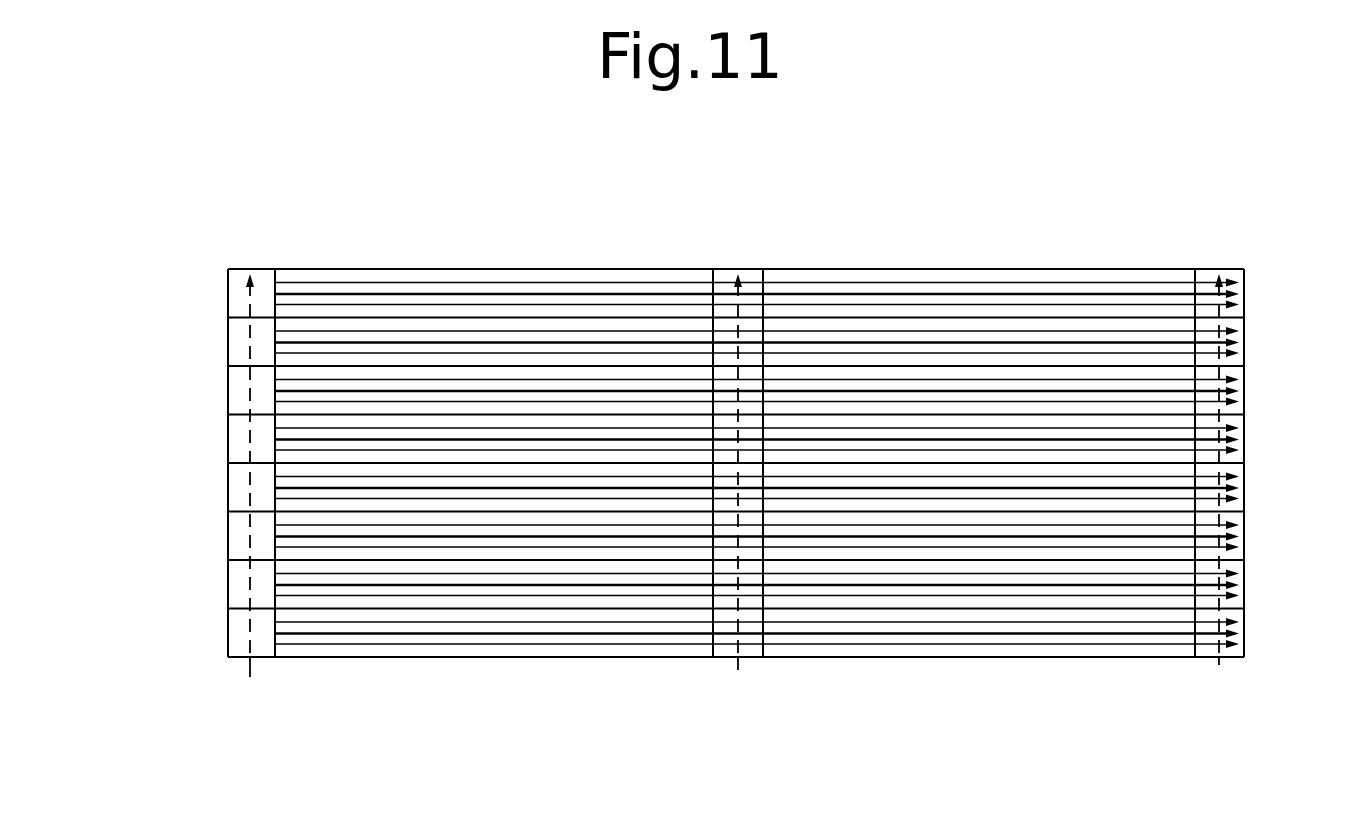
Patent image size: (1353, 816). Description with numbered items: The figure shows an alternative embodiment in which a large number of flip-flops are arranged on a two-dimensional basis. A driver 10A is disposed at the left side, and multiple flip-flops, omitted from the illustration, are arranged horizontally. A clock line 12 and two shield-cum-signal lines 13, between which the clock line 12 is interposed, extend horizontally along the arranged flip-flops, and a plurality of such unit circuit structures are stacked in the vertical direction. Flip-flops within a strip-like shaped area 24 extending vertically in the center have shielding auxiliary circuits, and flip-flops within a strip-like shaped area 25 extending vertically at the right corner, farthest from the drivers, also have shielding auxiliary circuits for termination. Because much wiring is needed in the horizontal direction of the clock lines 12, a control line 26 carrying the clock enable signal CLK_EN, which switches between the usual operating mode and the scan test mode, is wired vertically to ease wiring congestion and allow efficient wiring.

The driver 10A is at (228, 290).
The clock line 12 is at (858, 293).
The shield-cum-signal line 13 is at (918, 305).
The strip-like shaped area 24 is at (713, 309).
The strip-like shaped area 25 is at (1195, 310).
The control line 26 is at (252, 348).